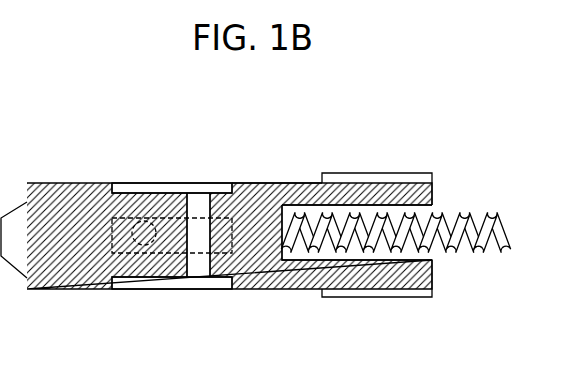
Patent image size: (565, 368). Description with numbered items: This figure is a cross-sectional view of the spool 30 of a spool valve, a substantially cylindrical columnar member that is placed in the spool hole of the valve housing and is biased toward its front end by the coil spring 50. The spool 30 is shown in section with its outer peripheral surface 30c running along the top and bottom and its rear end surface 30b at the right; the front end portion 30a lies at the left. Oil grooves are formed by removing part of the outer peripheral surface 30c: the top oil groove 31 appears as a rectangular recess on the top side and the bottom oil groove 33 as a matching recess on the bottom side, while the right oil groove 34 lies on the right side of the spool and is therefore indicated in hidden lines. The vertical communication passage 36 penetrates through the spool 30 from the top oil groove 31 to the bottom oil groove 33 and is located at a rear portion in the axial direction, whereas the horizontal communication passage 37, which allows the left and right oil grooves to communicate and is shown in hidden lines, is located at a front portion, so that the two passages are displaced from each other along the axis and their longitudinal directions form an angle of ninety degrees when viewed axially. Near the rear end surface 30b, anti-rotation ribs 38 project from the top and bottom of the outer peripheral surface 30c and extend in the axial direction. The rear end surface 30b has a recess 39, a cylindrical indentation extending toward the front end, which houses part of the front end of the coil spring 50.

The spool 30 is at (287, 184).
The front end portion of holder 30a is at (0, 197).
The rear end surface 30b is at (432, 190).
The outer peripheral surface 30c is at (250, 182).
The top oil groove 31 is at (123, 190).
The bottom oil groove 33 is at (127, 283).
The right oil groove 34 is at (112, 254).
The vertical communication passage 36 is at (196, 203).
The horizontal communication passage 37 is at (145, 246).
The projecting rib 38 is at (383, 172).
The recess 39 is at (432, 260).
The coil spring 50 is at (456, 215).